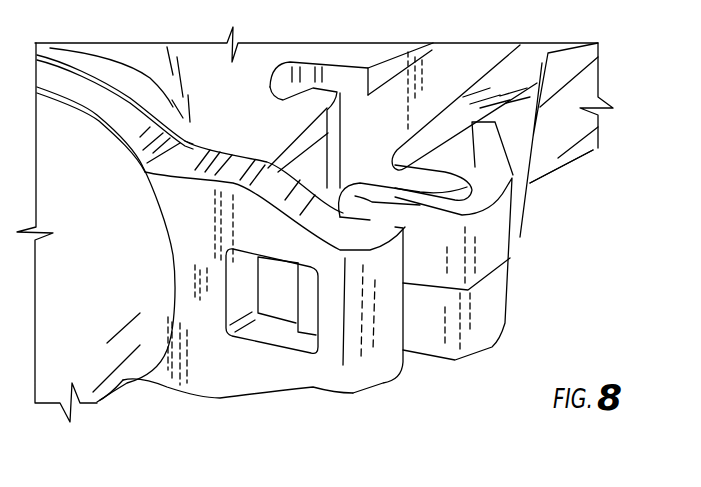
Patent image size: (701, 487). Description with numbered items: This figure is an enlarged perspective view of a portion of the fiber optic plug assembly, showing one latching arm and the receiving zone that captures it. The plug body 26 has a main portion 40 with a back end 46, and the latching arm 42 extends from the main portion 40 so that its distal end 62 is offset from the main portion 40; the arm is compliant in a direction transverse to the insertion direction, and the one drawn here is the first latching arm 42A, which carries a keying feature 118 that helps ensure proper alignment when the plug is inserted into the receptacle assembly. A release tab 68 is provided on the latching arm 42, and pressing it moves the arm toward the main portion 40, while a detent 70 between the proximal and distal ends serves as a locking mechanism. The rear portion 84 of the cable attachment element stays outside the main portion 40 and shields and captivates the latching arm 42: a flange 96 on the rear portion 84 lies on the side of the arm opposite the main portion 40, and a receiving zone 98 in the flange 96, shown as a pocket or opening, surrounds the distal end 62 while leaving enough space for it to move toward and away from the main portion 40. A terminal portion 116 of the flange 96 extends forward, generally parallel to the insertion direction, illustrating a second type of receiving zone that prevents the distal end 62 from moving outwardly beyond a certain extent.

The plug body 26 is at (193, 65).
The main portion 40 is at (257, 72).
The latching arm 42 is at (557, 182).
The first latching arm 42A is at (561, 166).
The back end 46 is at (117, 55).
The distal end 62 is at (308, 335).
The release tab 68 is at (487, 347).
The detent 70 is at (537, 215).
The rear portion 84 is at (170, 384).
The flange 96 is at (213, 398).
The receiving zone 98 is at (275, 335).
The terminal portion 116 is at (390, 375).
The keying feature 118 is at (607, 100).